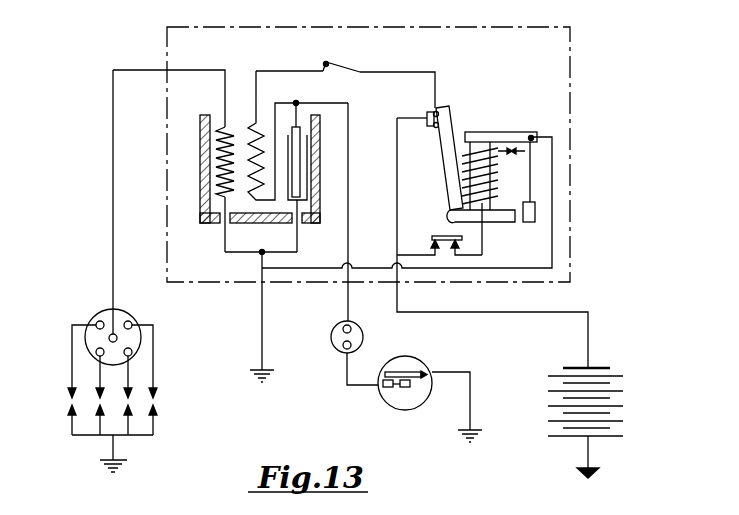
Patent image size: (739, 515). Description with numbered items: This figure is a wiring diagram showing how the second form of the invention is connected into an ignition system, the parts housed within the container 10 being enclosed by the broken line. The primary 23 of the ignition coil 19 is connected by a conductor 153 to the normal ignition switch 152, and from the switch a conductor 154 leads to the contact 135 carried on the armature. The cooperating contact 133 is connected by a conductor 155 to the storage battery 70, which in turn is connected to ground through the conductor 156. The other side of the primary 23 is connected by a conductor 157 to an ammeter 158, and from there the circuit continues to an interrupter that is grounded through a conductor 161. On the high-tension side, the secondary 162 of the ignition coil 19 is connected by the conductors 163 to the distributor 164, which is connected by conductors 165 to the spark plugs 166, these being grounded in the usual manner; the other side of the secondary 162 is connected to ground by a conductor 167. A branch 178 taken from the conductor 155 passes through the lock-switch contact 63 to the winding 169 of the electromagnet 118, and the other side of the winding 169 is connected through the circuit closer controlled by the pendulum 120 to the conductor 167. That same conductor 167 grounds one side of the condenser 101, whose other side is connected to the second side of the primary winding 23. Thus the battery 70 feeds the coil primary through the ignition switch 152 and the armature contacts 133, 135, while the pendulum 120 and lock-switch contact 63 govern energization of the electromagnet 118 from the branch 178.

The container 10 is at (563, 52).
The ignition coil 19 is at (215, 145).
The primary 23 is at (257, 128).
The lock-switch contact 63 is at (447, 240).
The storage battery 70 is at (610, 391).
The condenser 101 is at (297, 155).
The electromagnet 118 is at (482, 143).
The pendulum 120 is at (530, 162).
The cooperating contact 133 is at (430, 120).
The contact 135 is at (453, 122).
The ignition switch 152 is at (338, 65).
The conductor 153 is at (287, 72).
The conductor 154 is at (417, 72).
The conductor 155 is at (397, 168).
The conductor 156 is at (588, 453).
The conductor 157 is at (348, 193).
The ammeter 158 is at (363, 337).
The conductor 161 is at (460, 372).
The secondary 162 is at (220, 173).
The conductors 163 is at (128, 70).
The distributor 164 is at (125, 313).
The conductors 165 is at (102, 371).
The spark plugs 166 is at (102, 405).
The conductor 167 is at (224, 238).
The winding 169 is at (492, 175).
The branch 178 is at (410, 255).